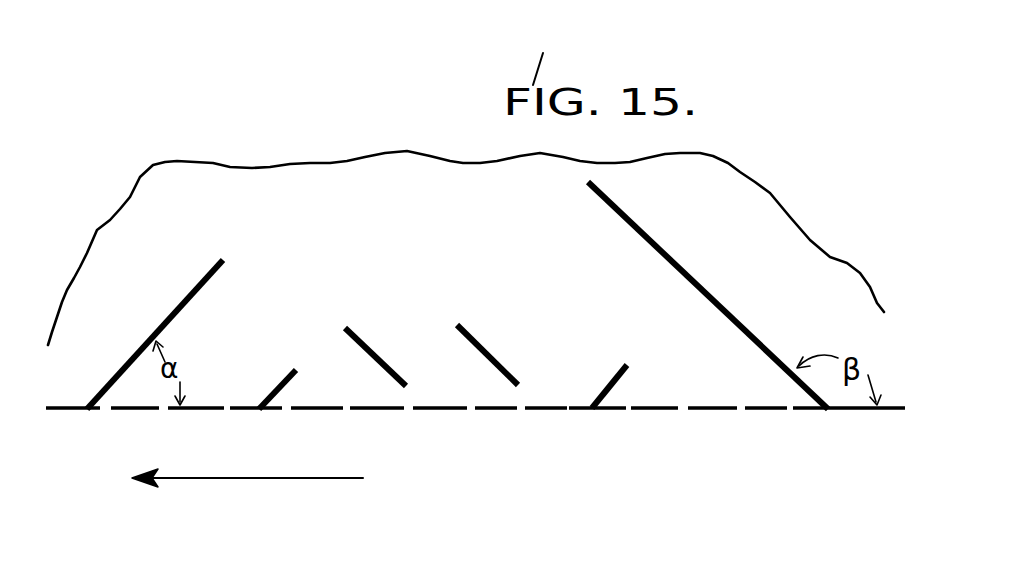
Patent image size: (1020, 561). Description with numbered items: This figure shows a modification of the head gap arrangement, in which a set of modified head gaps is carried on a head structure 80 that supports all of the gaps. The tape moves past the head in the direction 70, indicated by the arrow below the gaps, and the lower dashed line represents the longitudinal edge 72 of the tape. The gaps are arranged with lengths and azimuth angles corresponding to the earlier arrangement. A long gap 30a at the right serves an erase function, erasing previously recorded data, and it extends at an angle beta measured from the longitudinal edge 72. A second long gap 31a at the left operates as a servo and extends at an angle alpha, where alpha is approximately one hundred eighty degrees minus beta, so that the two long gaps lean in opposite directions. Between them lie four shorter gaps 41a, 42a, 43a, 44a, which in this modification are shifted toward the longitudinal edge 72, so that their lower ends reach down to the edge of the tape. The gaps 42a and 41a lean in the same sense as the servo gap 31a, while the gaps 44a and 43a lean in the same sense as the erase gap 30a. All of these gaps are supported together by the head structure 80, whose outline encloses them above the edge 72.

The head structure 80 is at (251, 176).
The longitudinal edge 72 is at (393, 410).
The direction of tape movement 70 is at (282, 480).
The gap 30a is at (643, 234).
The gap 31a is at (190, 283).
The gap 41a is at (627, 368).
The gap 42a is at (276, 391).
The gap 43a is at (495, 358).
The gap 44a is at (367, 338).